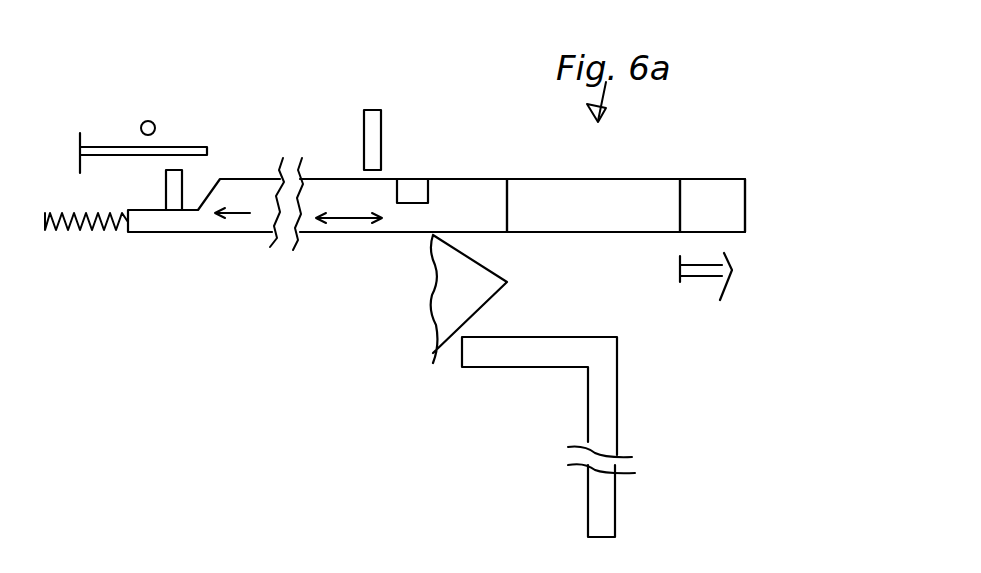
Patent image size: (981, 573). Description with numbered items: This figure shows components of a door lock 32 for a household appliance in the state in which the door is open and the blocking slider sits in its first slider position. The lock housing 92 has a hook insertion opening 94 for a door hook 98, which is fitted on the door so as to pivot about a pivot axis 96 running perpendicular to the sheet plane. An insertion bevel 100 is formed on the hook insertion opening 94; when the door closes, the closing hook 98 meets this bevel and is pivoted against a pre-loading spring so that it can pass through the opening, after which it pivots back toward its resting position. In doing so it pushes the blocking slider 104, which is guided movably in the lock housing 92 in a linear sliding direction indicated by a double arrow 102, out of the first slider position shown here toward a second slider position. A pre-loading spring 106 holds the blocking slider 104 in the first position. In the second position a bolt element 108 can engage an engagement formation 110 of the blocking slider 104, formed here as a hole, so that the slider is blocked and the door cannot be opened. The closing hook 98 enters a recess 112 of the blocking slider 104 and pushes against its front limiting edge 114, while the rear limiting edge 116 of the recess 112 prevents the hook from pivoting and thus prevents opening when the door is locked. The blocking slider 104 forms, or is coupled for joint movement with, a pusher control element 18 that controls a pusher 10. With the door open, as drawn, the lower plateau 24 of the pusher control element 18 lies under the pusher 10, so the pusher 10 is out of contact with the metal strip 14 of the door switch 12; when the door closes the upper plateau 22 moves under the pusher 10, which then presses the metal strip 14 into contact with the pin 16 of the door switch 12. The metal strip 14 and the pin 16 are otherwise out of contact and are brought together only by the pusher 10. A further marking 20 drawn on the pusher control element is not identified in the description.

The pusher 10 is at (166, 180).
The door switch 12 is at (98, 83).
The metal strip 14 is at (190, 145).
The pin 16 is at (150, 121).
The pusher control element 18 is at (213, 234).
The movement direction 20 is at (237, 218).
The upper plateau 22 is at (240, 172).
The lower plateau 24 is at (157, 210).
The door lock 32 is at (231, 409).
The lock housing 92 is at (430, 330).
The hook insertion opening 94 is at (670, 268).
The pivot axis 96 is at (607, 520).
The door hook 98 is at (617, 397).
The insertion bevel 100 is at (487, 305).
The double arrow 102 is at (345, 232).
The blocking slider 104 is at (717, 179).
The pre-loading spring 106 is at (82, 230).
The bolt element 108 is at (381, 125).
The engagement formation 110 is at (405, 179).
The recess 112 is at (600, 198).
The front limiting edge 114 is at (507, 207).
The rear limiting edge 116 is at (675, 198).